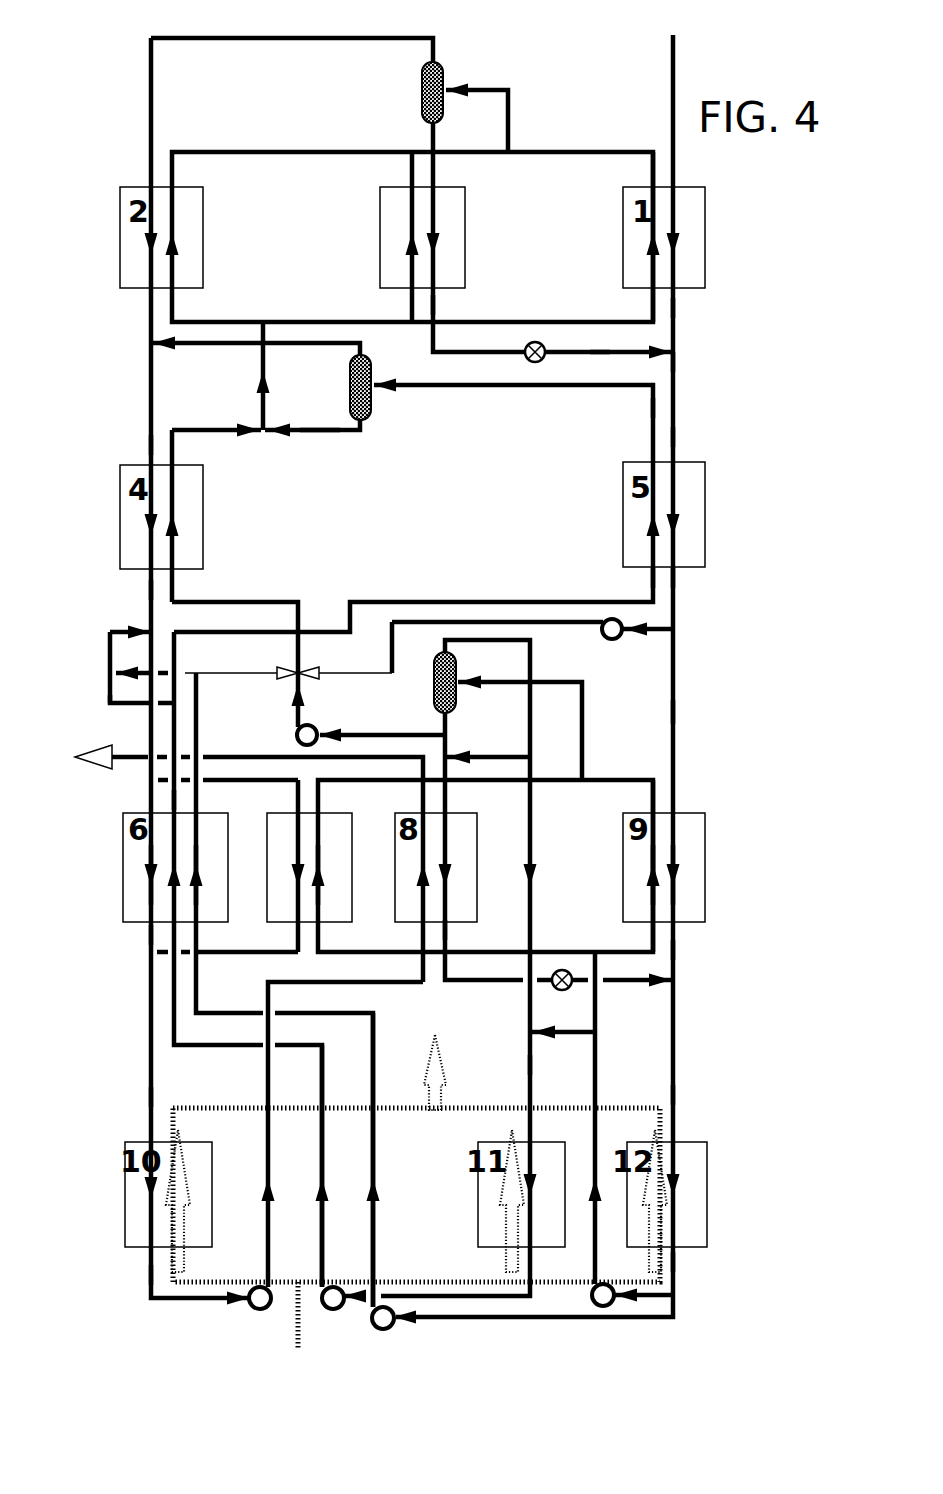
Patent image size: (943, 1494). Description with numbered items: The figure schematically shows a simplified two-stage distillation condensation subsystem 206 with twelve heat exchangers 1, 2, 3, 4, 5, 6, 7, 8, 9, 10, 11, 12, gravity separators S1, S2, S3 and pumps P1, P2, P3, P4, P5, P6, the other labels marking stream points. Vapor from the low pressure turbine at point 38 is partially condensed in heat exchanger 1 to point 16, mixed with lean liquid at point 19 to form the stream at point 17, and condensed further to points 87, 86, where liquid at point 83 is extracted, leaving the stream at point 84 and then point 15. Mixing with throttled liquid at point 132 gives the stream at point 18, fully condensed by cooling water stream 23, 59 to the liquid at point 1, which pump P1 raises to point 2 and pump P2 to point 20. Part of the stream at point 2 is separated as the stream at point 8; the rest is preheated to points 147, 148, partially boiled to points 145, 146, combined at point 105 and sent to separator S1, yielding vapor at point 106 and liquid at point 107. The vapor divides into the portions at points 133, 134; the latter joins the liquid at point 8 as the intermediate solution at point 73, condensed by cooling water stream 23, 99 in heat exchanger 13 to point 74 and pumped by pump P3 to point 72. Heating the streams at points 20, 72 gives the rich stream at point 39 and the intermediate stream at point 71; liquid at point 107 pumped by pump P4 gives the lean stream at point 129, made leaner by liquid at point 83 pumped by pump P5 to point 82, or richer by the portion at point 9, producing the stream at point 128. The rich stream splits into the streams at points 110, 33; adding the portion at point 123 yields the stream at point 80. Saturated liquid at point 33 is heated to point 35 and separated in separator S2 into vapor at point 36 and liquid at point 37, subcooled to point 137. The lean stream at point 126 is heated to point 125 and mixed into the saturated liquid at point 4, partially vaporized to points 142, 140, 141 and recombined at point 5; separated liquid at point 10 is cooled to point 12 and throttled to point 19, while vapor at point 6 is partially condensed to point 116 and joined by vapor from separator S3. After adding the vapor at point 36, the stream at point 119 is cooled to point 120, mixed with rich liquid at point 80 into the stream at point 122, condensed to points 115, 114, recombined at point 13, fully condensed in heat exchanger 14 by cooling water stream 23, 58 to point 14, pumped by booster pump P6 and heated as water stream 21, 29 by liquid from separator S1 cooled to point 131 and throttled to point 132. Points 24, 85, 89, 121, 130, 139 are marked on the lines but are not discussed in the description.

The adsorption system 206 is at (92, 85).
The line 1 is at (685, 1263).
The line 2 is at (602, 1118).
The adsorber 3 is at (422, 237).
The line 4 is at (255, 376).
The line 5 is at (489, 118).
The line 6 is at (292, 54).
The adsorber 7 is at (309, 867).
The line 8 is at (563, 1041).
The valve 9 is at (279, 662).
The line 10 is at (550, 242).
The line 11 is at (247, 959).
The line 12 is at (450, 306).
The line 13 is at (137, 1096).
The line 14 is at (137, 1276).
The line 15 is at (689, 948).
The line 16 is at (689, 308).
The line 17 is at (689, 364).
The line 18 is at (690, 1093).
The line 19 is at (602, 366).
The line 20 is at (389, 1160).
The line 21 is at (333, 1134).
The line 23 is at (282, 1315).
The vent 24 is at (436, 1061).
The product outlet 29 is at (252, 863).
The line 33 is at (640, 581).
The line 35 is at (637, 406).
The line 36 is at (256, 354).
The line 37 is at (327, 432).
The line 38 is at (537, 679).
The line 39 is at (175, 799).
The purge arrow 58 is at (186, 1193).
The purge arrow 59 is at (646, 1193).
The line 71 is at (285, 990).
The line 72 is at (338, 1166).
The line 73 is at (517, 1064).
The line 74 is at (455, 1273).
The line 80 is at (141, 665).
The line 82 is at (355, 649).
The line 83 is at (647, 640).
The line 84 is at (689, 712).
The line 85 is at (690, 874).
The line 86 is at (689, 581).
The line 87 is at (689, 436).
The line 89 is at (209, 874).
The purge arrow 99 is at (500, 1193).
The line 105 is at (551, 727).
The line 106 is at (487, 709).
The line 107 is at (467, 745).
The line 110 is at (124, 711).
The line 114 is at (134, 937).
The line 115 is at (229, 939).
The line 116 is at (178, 671).
The line 119 is at (131, 443).
The line 120 is at (131, 588).
The line 121 is at (285, 866).
The line 122 is at (207, 780).
The line 123 is at (230, 660).
The line 125 is at (216, 421).
The line 126 is at (190, 516).
The line 128 is at (415, 506).
The line 129 is at (239, 680).
The line 130 is at (481, 880).
The line 131 is at (466, 932).
The line 132 is at (605, 988).
The line 133 is at (488, 749).
The line 134 is at (480, 1038).
The line 137 is at (319, 419).
The line 139 is at (139, 874).
The line 140 is at (410, 237).
The line 141 is at (397, 237).
The line 142 is at (638, 237).
The line 145 is at (483, 866).
The line 146 is at (640, 866).
The line 147 is at (339, 874).
The line 148 is at (640, 874).
The separator S1 is at (428, 682).
The separator S2 is at (343, 387).
The separator S3 is at (416, 92).
The pump P1 is at (618, 1297).
The pump P2 is at (383, 1333).
The pump P3 is at (329, 1312).
The pump P4 is at (371, 724).
The pump P5 is at (507, 636).
The pump P6 is at (248, 1312).